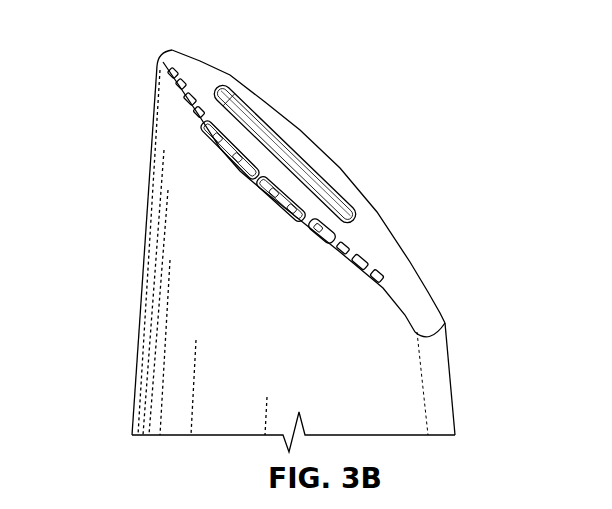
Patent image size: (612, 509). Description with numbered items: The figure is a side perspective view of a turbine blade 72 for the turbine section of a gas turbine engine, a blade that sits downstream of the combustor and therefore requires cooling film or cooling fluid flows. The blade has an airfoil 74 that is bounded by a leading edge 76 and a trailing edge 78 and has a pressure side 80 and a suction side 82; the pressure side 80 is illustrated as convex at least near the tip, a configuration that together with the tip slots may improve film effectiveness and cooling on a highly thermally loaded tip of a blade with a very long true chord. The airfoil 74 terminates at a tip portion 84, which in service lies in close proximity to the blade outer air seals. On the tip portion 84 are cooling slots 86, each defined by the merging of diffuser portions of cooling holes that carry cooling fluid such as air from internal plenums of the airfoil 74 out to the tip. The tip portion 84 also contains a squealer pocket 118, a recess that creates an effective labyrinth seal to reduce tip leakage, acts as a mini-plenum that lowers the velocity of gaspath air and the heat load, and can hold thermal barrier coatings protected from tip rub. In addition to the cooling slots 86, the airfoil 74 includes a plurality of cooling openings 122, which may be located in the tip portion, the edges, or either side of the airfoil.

The turbine blade 72 is at (116, 210).
The airfoil 74 is at (150, 386).
The leading edge 76 is at (145, 250).
The trailing edge 78 is at (445, 418).
The pressure side 80 is at (285, 349).
The suction side 82 is at (338, 170).
The tip portion 84 is at (397, 277).
The cooling slot 86 is at (222, 140).
The squealer pocket 118 is at (283, 150).
The cooling openings 122 is at (199, 109).